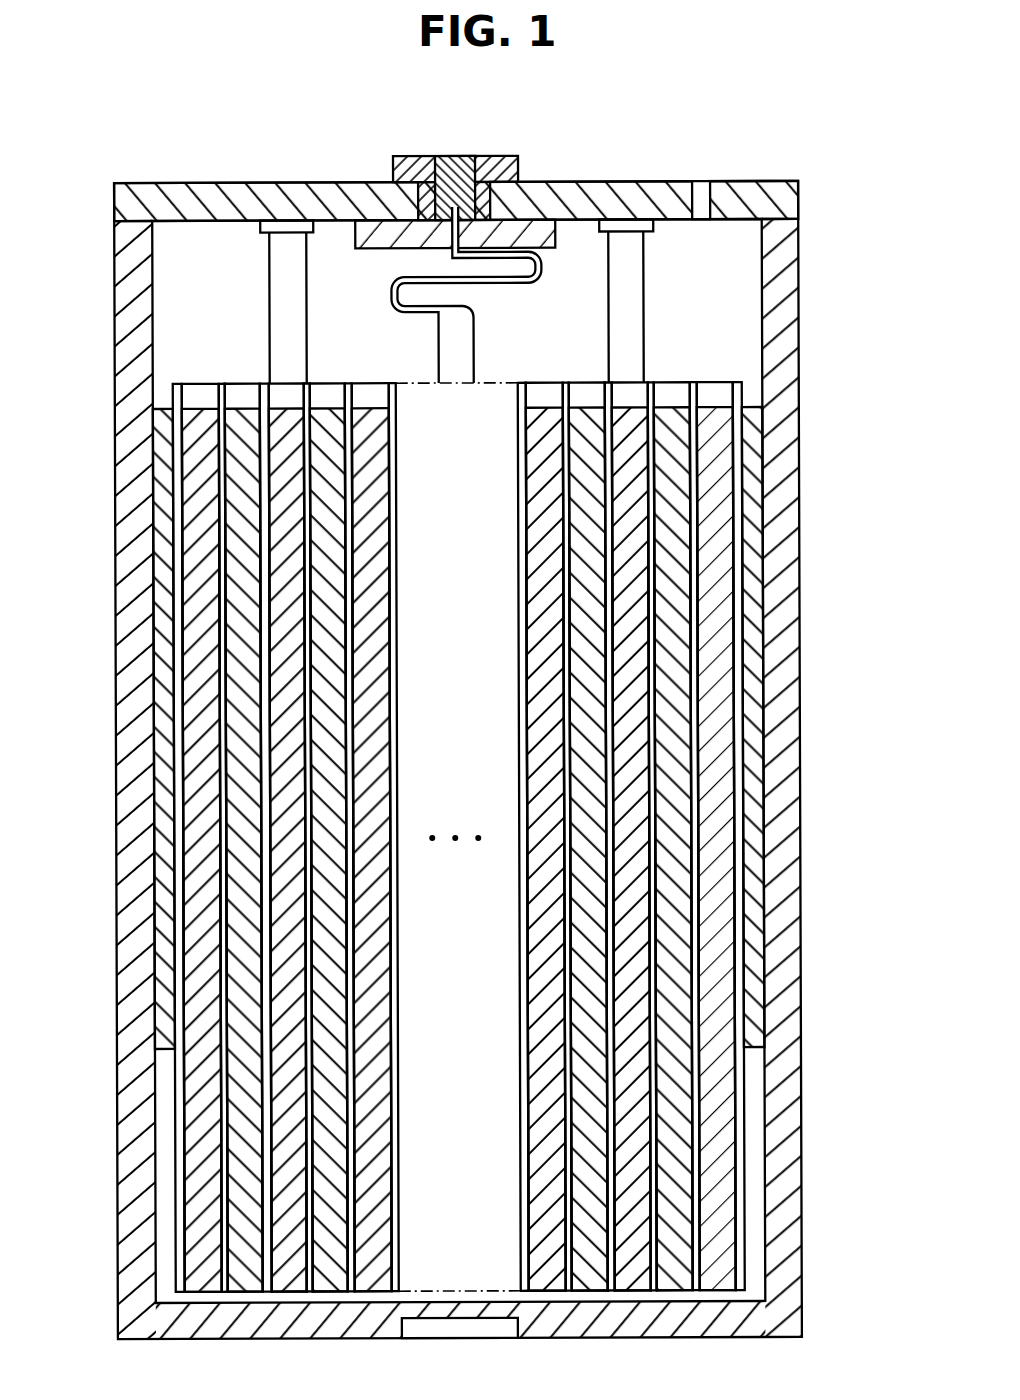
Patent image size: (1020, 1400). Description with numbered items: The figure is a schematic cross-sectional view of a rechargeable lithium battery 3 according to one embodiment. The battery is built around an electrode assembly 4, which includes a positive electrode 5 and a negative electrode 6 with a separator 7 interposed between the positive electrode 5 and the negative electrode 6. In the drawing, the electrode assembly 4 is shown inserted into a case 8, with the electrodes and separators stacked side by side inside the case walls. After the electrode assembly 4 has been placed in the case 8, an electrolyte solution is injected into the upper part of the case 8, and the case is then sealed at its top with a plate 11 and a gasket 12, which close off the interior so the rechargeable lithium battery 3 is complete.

The rechargeable lithium battery 3 is at (489, 725).
The electrode assembly 4 is at (456, 793).
The positive electrode 5 is at (727, 1203).
The negative electrode 6 is at (235, 1095).
The separator 7 is at (182, 1202).
The case 8 is at (116, 346).
The plate 11 is at (593, 188).
The gasket 12 is at (402, 157).